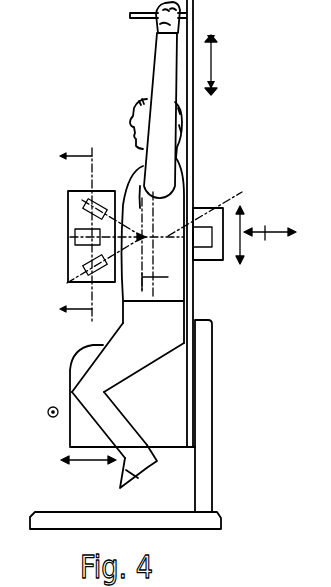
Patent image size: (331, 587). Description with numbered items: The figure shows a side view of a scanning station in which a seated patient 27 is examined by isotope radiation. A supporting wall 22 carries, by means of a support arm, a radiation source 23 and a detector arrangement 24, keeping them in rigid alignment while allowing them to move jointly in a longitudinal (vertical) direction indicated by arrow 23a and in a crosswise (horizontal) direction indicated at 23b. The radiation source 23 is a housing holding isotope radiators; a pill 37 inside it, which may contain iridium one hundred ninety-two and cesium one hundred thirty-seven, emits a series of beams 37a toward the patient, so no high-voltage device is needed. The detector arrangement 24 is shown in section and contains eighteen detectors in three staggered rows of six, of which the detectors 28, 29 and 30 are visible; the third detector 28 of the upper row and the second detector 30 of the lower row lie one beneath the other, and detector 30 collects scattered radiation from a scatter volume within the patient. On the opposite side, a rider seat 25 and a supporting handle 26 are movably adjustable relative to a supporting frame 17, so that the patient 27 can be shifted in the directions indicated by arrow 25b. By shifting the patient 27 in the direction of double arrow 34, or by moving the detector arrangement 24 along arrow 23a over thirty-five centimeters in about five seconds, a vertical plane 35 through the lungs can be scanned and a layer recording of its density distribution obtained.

The supporting frame 17 is at (213, 402).
The supporting wall 22 is at (189, 147).
The radiation source 23 is at (205, 208).
The arrow indicating longitudinal (vertical) direction 23a is at (246, 223).
The arrow indicating crosswise (horizontal) direction 23b is at (265, 240).
The detector arrangement 24 is at (75, 191).
The rider seat 25 is at (75, 373).
The arrow indicating seat movement 25b is at (90, 463).
The supporting handle 26 is at (134, 18).
The patient 27 is at (163, 315).
The detector 28 is at (84, 210).
The detector 29 is at (75, 245).
The detector 30 is at (85, 269).
The double arrow 34 is at (211, 63).
The plane 35 is at (168, 277).
The pill 37 is at (203, 240).
The beams 37a is at (245, 186).